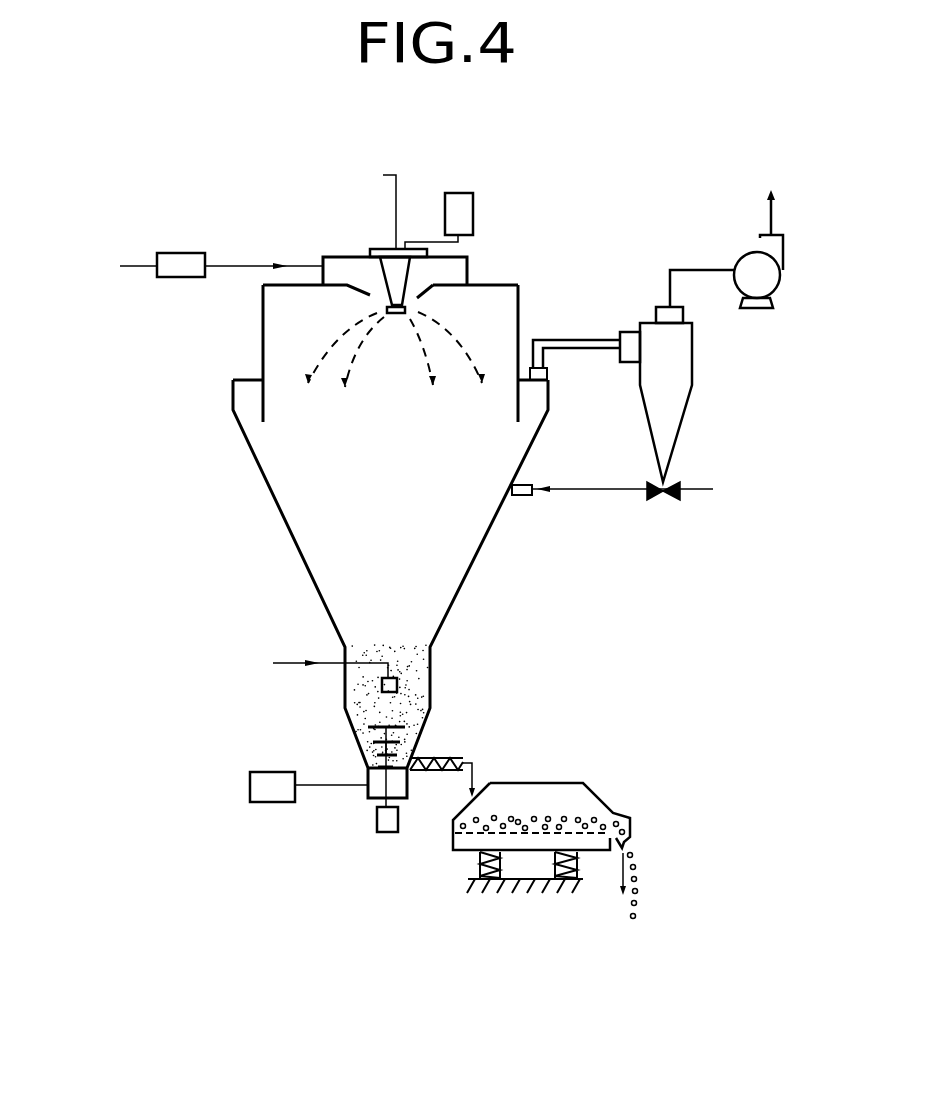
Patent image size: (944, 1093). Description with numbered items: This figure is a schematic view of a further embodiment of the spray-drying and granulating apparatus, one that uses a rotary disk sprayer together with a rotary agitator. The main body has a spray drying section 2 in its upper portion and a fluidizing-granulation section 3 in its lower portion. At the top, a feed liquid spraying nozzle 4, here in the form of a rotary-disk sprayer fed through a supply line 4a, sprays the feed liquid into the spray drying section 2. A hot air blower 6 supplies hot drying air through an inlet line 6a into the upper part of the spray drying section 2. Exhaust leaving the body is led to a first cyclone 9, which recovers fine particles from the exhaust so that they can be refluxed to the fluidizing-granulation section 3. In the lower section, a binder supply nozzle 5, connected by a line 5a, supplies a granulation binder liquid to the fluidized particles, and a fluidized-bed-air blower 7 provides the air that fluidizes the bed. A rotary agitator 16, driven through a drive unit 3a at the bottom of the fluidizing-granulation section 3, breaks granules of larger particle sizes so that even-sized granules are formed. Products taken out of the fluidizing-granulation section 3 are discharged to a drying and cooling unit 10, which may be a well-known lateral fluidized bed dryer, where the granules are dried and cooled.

The spray drying section 2 is at (497, 295).
The feed liquid spraying nozzle 4 is at (397, 315).
The feed line to atomizer 4a is at (366, 203).
The hot air blower 6 is at (187, 277).
The drying air inlet line 6a is at (133, 265).
The first cyclone 9 is at (685, 387).
The binder supply nozzle 5 is at (397, 685).
The sensor signal line 5a is at (278, 663).
The fluidizing-granulation section 3 is at (410, 730).
The rotary agitator 16 is at (380, 737).
The agitator drive motor 3a is at (383, 773).
The fluidized-bed-air blower 7 is at (273, 803).
The drying and cooling unit 10 is at (563, 795).